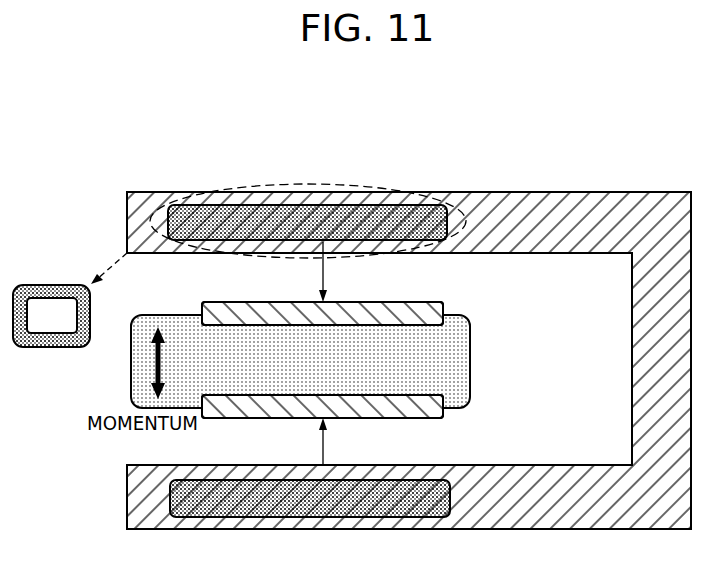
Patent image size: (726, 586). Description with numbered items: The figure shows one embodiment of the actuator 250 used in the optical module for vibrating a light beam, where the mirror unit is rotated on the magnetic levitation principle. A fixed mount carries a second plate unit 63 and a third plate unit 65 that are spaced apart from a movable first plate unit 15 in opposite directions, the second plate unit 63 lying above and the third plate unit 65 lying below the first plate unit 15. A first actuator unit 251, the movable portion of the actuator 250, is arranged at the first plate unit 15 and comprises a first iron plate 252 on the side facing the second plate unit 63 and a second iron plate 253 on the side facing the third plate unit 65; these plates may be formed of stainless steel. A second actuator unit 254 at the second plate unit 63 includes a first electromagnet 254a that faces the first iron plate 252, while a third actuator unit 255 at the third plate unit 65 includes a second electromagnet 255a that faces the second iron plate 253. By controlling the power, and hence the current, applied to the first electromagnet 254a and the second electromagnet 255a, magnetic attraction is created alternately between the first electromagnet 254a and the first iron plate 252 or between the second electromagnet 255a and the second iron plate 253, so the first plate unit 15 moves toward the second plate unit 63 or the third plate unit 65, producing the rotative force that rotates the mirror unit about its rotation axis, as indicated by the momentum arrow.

The actuator 250 is at (108, 178).
The second plate unit 63 is at (140, 220).
The third plate unit 65 is at (138, 497).
The second actuator unit 254 is at (457, 200).
The first electromagnet 254a is at (292, 205).
The third actuator unit 255 is at (458, 520).
The second electromagnet 255a is at (293, 500).
The first actuator unit 251 is at (360, 360).
The first iron plate 252 is at (455, 330).
The second iron plate 253 is at (455, 383).
The first plate unit 15 is at (133, 372).